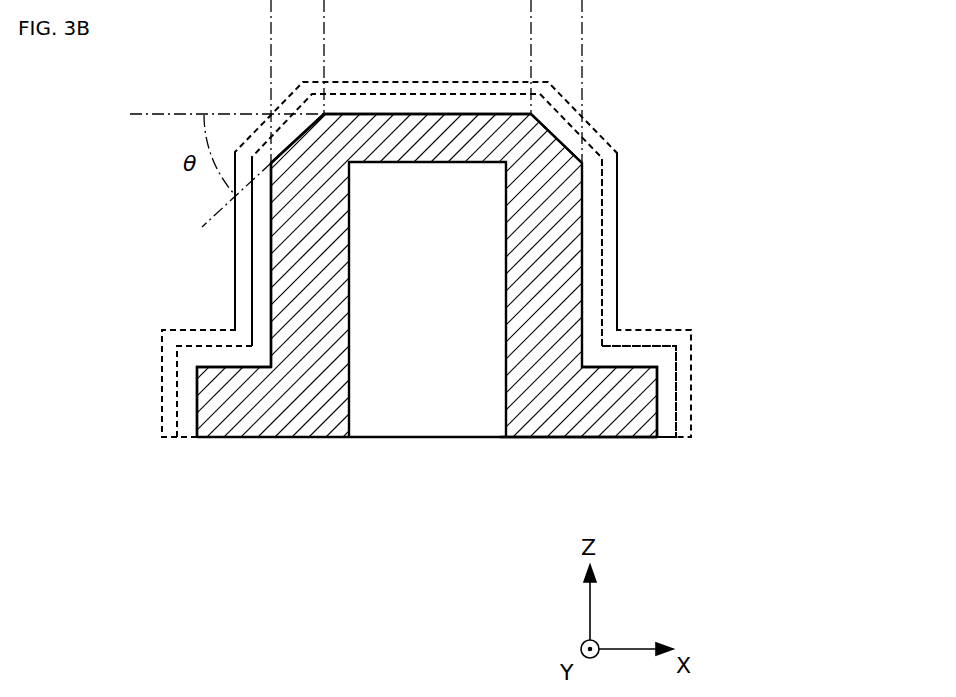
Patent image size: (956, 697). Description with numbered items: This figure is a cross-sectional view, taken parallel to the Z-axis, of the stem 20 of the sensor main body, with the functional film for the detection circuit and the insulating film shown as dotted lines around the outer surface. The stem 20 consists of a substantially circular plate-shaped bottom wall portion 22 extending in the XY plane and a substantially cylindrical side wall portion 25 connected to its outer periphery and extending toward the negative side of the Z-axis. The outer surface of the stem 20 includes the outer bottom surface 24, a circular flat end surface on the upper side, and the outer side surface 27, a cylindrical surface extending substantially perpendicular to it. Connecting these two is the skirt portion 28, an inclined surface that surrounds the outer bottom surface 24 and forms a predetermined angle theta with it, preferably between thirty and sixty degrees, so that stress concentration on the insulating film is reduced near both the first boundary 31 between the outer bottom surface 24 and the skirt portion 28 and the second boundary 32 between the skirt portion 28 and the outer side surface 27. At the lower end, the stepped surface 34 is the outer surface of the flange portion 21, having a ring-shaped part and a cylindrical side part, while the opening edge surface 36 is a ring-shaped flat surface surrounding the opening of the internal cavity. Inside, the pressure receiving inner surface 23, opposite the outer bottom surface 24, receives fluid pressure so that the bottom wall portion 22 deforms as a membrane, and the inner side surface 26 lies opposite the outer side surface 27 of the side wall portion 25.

The stem 20 is at (712, 47).
The flange portion 21 is at (218, 387).
The bottom wall portion 22 is at (453, 130).
The pressure receiving inner surface 23 is at (418, 163).
The outer bottom surface 24 is at (417, 128).
The side wall portion 25 is at (298, 300).
The inner side surface 26 is at (505, 380).
The outer side surface 27 is at (273, 250).
The skirt portion 28 is at (292, 143).
The first boundary 31 is at (555, 90).
The second boundary 32 is at (610, 143).
The stepped surface 34 is at (620, 367).
The opening edge surface 36 is at (580, 437).